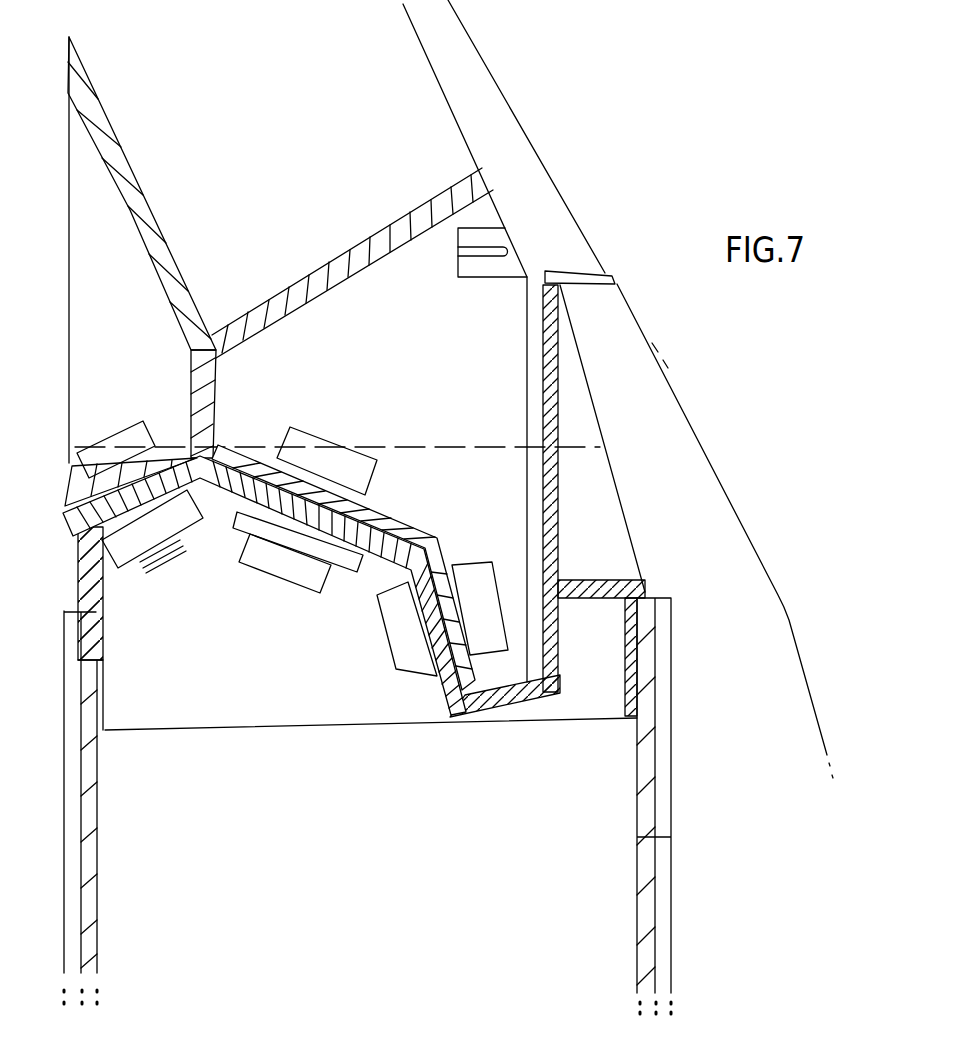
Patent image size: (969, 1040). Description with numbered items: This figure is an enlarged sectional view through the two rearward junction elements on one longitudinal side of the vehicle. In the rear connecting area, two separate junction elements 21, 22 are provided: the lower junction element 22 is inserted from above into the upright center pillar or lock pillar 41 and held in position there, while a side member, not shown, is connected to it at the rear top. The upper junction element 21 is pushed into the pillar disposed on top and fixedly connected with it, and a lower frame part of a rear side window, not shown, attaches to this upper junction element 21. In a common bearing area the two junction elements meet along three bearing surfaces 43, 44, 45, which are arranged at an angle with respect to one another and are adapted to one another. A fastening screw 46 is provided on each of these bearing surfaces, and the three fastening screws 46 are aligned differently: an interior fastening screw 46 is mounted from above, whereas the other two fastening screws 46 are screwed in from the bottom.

The upper junction element 21 is at (178, 252).
The lower junction element 22 is at (632, 518).
The lock pillar 41 is at (650, 917).
The bearing surface 43 is at (76, 458).
The bearing surface 44 is at (250, 470).
The bearing surface 45 is at (440, 635).
The fastening screw 46 is at (125, 432).